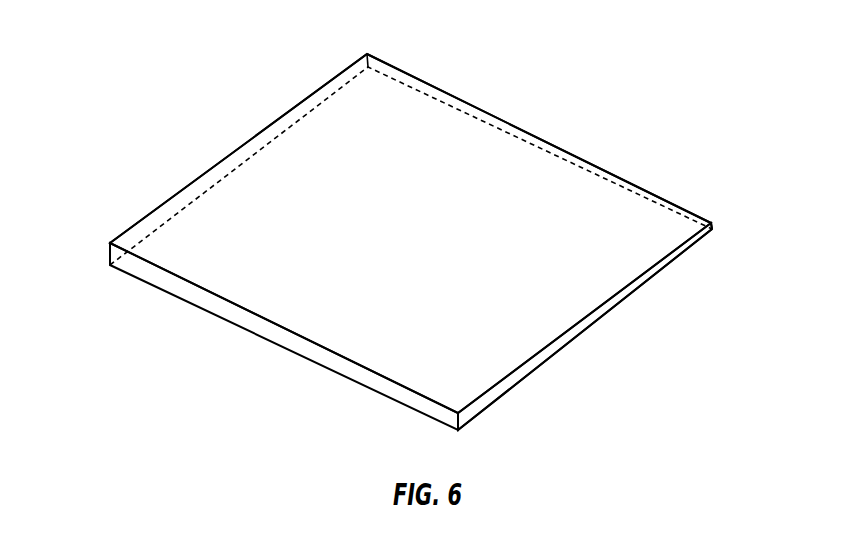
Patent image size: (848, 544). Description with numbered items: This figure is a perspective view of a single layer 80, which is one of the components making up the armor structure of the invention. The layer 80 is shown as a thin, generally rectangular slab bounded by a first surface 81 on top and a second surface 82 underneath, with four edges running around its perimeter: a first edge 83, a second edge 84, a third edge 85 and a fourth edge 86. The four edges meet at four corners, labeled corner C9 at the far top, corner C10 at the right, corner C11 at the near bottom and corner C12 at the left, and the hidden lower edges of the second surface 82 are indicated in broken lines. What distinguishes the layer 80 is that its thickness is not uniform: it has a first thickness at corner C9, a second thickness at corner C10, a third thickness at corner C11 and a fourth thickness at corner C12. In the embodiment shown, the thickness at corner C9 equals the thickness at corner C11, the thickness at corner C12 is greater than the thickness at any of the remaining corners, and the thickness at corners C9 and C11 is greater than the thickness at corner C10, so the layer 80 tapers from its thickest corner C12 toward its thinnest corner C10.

The layer 80 is at (583, 95).
The first surface 81 is at (455, 137).
The second surface 82 is at (508, 393).
The first edge 83 is at (605, 177).
The second edge 84 is at (663, 270).
The third edge 85 is at (285, 350).
The fourth edge 86 is at (242, 148).
The corner C9 is at (372, 67).
The corner C10 is at (713, 228).
The corner C11 is at (455, 425).
The corner C12 is at (110, 253).